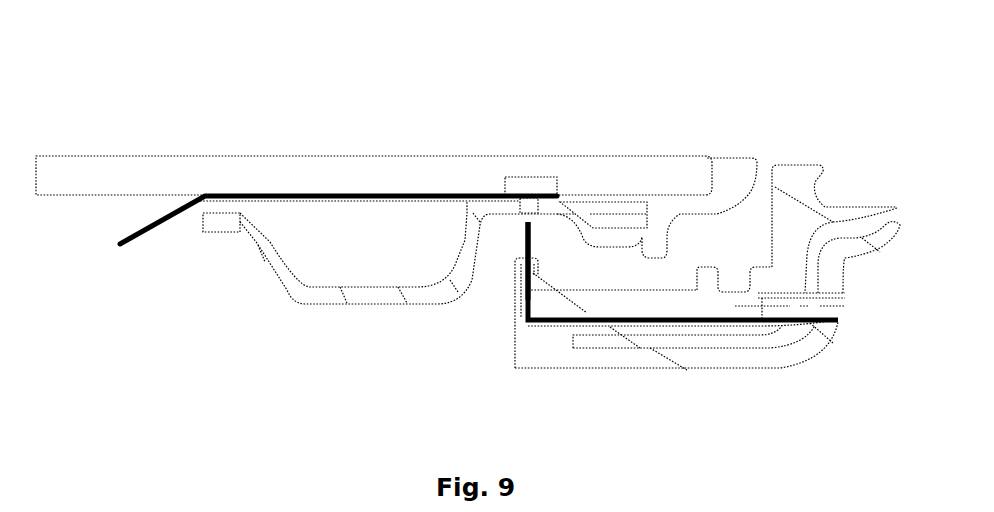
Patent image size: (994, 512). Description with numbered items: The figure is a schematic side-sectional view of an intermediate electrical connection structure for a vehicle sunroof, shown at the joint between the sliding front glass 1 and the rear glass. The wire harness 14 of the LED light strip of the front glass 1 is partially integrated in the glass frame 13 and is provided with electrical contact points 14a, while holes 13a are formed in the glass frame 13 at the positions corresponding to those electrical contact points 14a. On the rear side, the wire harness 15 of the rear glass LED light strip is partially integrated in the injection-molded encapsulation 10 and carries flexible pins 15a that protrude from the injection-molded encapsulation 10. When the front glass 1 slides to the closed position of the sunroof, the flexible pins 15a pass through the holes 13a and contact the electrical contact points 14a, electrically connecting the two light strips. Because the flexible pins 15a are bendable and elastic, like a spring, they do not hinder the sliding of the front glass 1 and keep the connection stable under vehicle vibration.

The front glass 1 is at (262, 174).
The injection-molded encapsulation 10 is at (703, 357).
The glass frame 13 is at (305, 293).
The holes 13a is at (536, 198).
The wire harness 14 is at (148, 228).
The electrical contact points 14a is at (525, 196).
The wire harness 15 is at (547, 323).
The flexible pins 15a is at (527, 232).